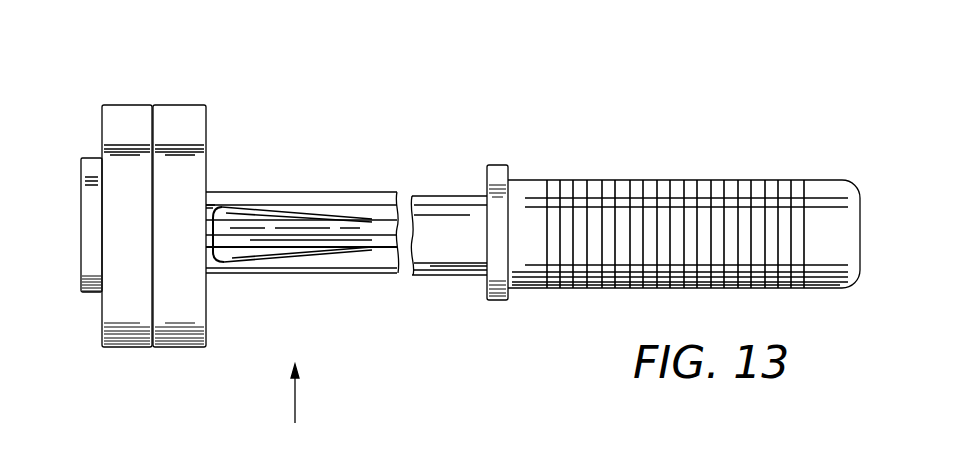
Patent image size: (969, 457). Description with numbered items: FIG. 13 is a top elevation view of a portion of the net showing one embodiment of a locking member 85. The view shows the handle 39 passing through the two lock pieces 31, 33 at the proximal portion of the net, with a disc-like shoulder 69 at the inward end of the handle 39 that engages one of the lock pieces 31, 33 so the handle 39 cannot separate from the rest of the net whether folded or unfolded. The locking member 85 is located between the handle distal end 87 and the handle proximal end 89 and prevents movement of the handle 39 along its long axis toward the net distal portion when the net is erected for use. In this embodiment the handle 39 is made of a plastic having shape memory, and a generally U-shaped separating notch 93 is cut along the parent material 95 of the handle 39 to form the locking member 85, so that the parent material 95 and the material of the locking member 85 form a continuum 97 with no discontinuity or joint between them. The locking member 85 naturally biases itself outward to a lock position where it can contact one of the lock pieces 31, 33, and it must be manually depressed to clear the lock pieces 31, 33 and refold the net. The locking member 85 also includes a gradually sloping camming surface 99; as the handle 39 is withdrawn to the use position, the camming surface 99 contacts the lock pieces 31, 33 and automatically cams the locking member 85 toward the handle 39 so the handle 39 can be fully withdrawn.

The handle distal end 87 is at (80, 117).
The lock piece 31 is at (125, 110).
The lock piece 33 is at (170, 105).
The disc-like shoulder 69 is at (80, 293).
The locking member 85 is at (233, 217).
The separating notch 93 is at (278, 213).
The continuum 97 is at (338, 233).
The parent material 95 is at (385, 212).
The camming surface 99 is at (295, 233).
The handle 39 is at (380, 277).
The handle proximal end 89 is at (747, 185).